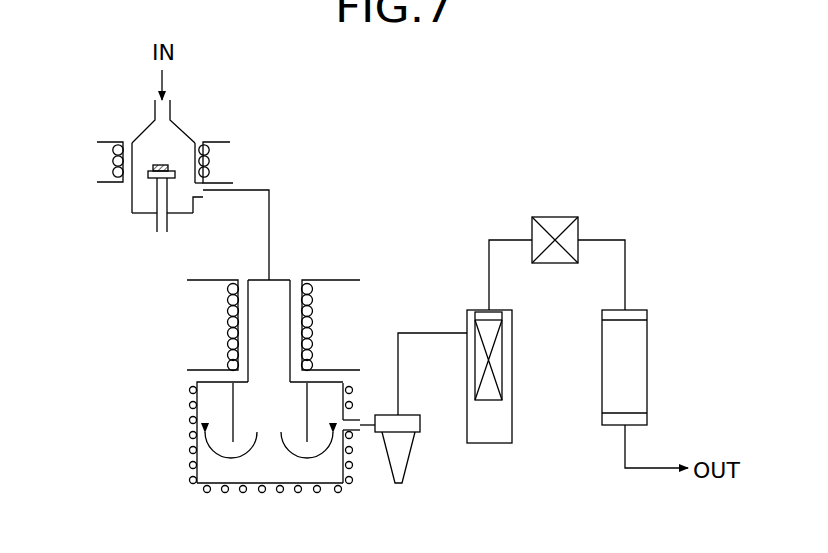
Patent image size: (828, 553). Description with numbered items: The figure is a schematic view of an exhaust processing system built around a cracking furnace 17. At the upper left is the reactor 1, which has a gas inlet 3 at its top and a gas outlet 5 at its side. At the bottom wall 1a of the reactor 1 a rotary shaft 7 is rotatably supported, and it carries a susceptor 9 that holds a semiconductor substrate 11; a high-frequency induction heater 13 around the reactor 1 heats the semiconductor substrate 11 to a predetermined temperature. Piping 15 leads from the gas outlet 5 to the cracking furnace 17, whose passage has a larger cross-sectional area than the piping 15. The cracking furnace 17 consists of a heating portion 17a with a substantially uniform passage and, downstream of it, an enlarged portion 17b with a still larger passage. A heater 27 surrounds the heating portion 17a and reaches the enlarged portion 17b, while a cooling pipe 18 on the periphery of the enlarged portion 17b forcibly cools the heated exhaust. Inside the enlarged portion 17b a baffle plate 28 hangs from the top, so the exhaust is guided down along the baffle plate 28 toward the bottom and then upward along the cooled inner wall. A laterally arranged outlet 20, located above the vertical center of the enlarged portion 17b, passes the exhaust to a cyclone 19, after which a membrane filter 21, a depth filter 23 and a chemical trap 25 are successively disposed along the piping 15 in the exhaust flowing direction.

The reactor 1 is at (126, 200).
The bottom wall 1a is at (141, 213).
The gas inlet 3 is at (170, 107).
The gas outlet 5 is at (200, 196).
The rotary shaft 7 is at (165, 228).
The susceptor 9 is at (150, 178).
The semiconductor substrate 11 is at (167, 165).
The high-frequency induction heater 13 is at (209, 163).
The piping 15 is at (270, 227).
The cracking furnace 17 is at (304, 488).
The heating portion 17a is at (257, 337).
The enlarged portion 17b is at (208, 457).
The cooling pipe 18 is at (261, 495).
The cyclone 19 is at (400, 459).
The outlet 20 is at (353, 433).
The membrane filter 21 is at (512, 413).
The depth filter 23 is at (557, 217).
The chemical trap 25 is at (646, 356).
The heater 27 is at (313, 333).
The baffle plate 28 is at (307, 412).